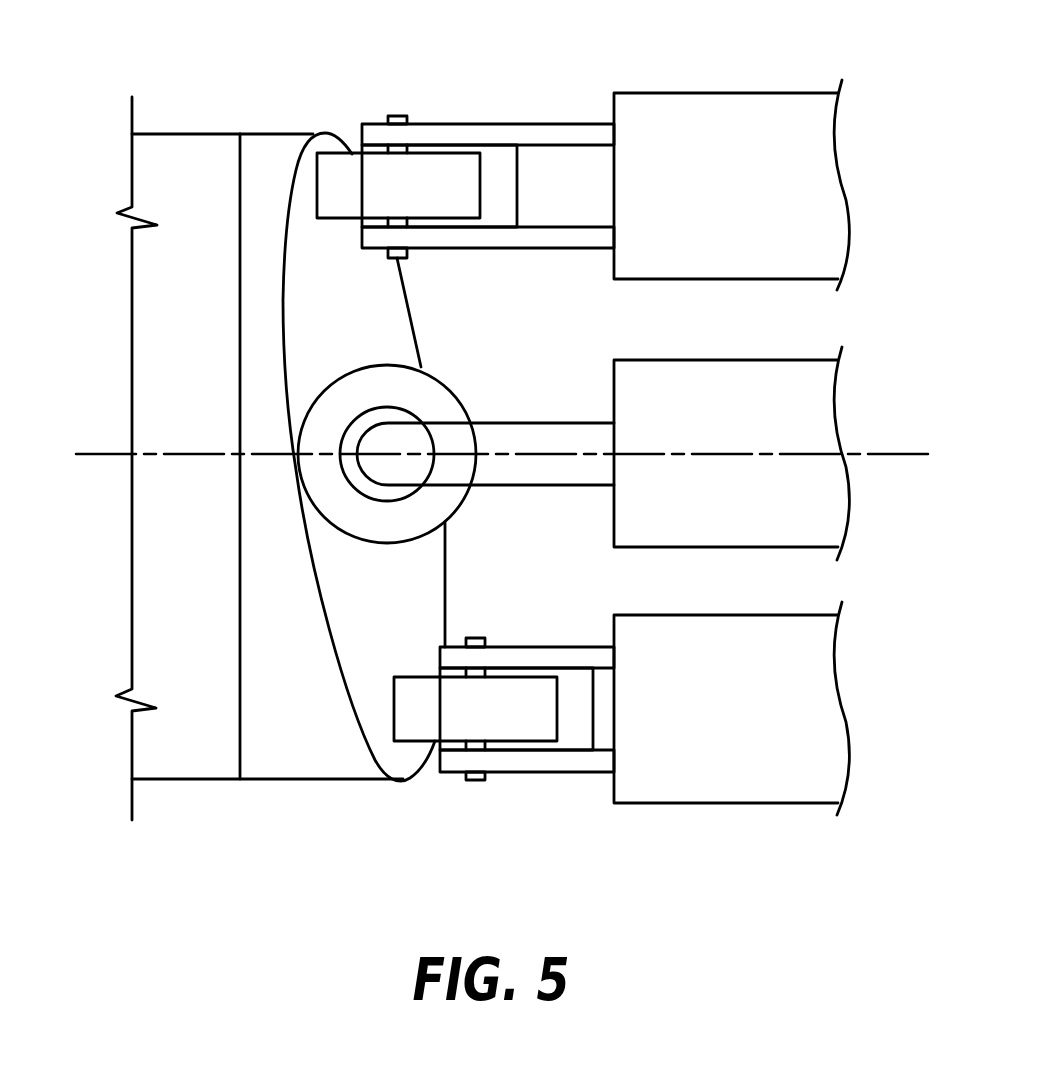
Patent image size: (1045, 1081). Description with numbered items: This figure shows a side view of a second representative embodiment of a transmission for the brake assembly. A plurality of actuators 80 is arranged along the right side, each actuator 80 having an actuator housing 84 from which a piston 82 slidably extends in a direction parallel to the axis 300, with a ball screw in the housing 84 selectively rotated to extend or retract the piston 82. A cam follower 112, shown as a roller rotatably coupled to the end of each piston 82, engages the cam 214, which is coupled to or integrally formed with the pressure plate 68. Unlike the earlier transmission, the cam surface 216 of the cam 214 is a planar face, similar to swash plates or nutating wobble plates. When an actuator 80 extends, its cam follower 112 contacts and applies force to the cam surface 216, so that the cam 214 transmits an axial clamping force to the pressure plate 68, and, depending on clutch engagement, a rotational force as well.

The pressure plate 68 is at (188, 146).
The cam 214 is at (280, 133).
The cam surface 216 is at (392, 298).
The cam follower 112 is at (443, 155).
The piston 82 is at (565, 129).
The actuator 80 is at (720, 80).
The actuator housing 84 is at (777, 97).
The axis 300 is at (96, 453).